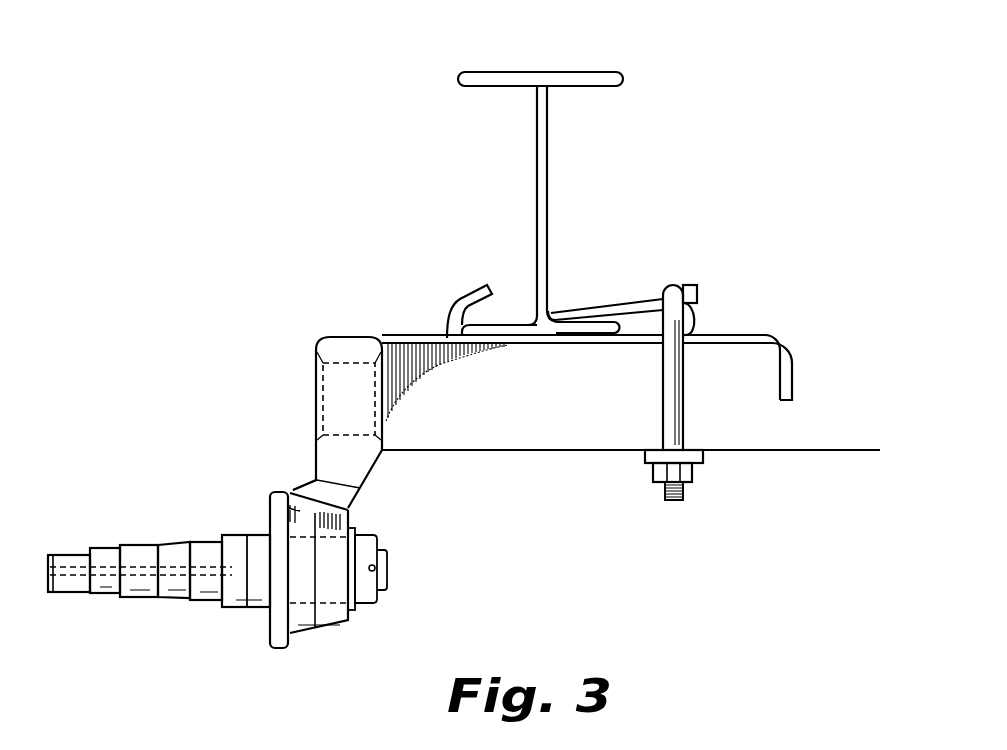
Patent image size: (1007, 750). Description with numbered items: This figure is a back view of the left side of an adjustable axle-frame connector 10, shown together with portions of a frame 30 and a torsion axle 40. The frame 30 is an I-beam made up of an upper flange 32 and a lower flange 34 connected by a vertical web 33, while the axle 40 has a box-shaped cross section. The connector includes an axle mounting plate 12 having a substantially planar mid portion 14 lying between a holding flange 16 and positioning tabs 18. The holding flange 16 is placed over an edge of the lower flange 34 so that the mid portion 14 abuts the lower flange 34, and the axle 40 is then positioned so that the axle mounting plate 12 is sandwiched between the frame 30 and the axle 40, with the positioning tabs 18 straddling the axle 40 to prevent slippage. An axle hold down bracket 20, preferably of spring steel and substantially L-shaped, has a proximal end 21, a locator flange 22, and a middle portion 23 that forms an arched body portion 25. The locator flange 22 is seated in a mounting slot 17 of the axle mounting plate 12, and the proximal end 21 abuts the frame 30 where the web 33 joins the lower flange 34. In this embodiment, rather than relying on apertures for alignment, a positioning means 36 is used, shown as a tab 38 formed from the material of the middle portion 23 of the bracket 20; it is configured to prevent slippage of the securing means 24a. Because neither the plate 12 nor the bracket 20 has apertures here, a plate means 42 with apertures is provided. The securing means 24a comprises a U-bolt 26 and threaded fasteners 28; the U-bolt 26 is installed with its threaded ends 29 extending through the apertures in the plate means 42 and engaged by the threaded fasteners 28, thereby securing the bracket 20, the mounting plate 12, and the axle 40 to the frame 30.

The adjustable axle-frame connector 10 is at (380, 150).
The axle mounting plate 12 is at (474, 366).
The substantially planar mid portion 14 is at (607, 340).
The holding flange 16 is at (475, 303).
The mounting slot 17 is at (696, 336).
The positioning tabs 18 is at (793, 375).
The axle hold down bracket 20 is at (620, 265).
The proximal end 21 is at (551, 310).
The locator flange 22 is at (700, 322).
The middle portion 23 is at (635, 300).
The securing means 24a is at (657, 372).
The arched body portion 25 is at (607, 312).
The U-bolt 26 is at (679, 405).
The threaded fasteners 28 is at (657, 475).
The threaded ends 29 is at (673, 500).
The frame 30 is at (682, 115).
The upper flange 32 is at (540, 82).
The vertical web 33 is at (537, 178).
The lower flange 34 is at (540, 330).
The positioning means 36 is at (756, 287).
The tab 38 is at (697, 295).
The torsion axle 40 is at (505, 512).
The plate means 42 is at (692, 455).